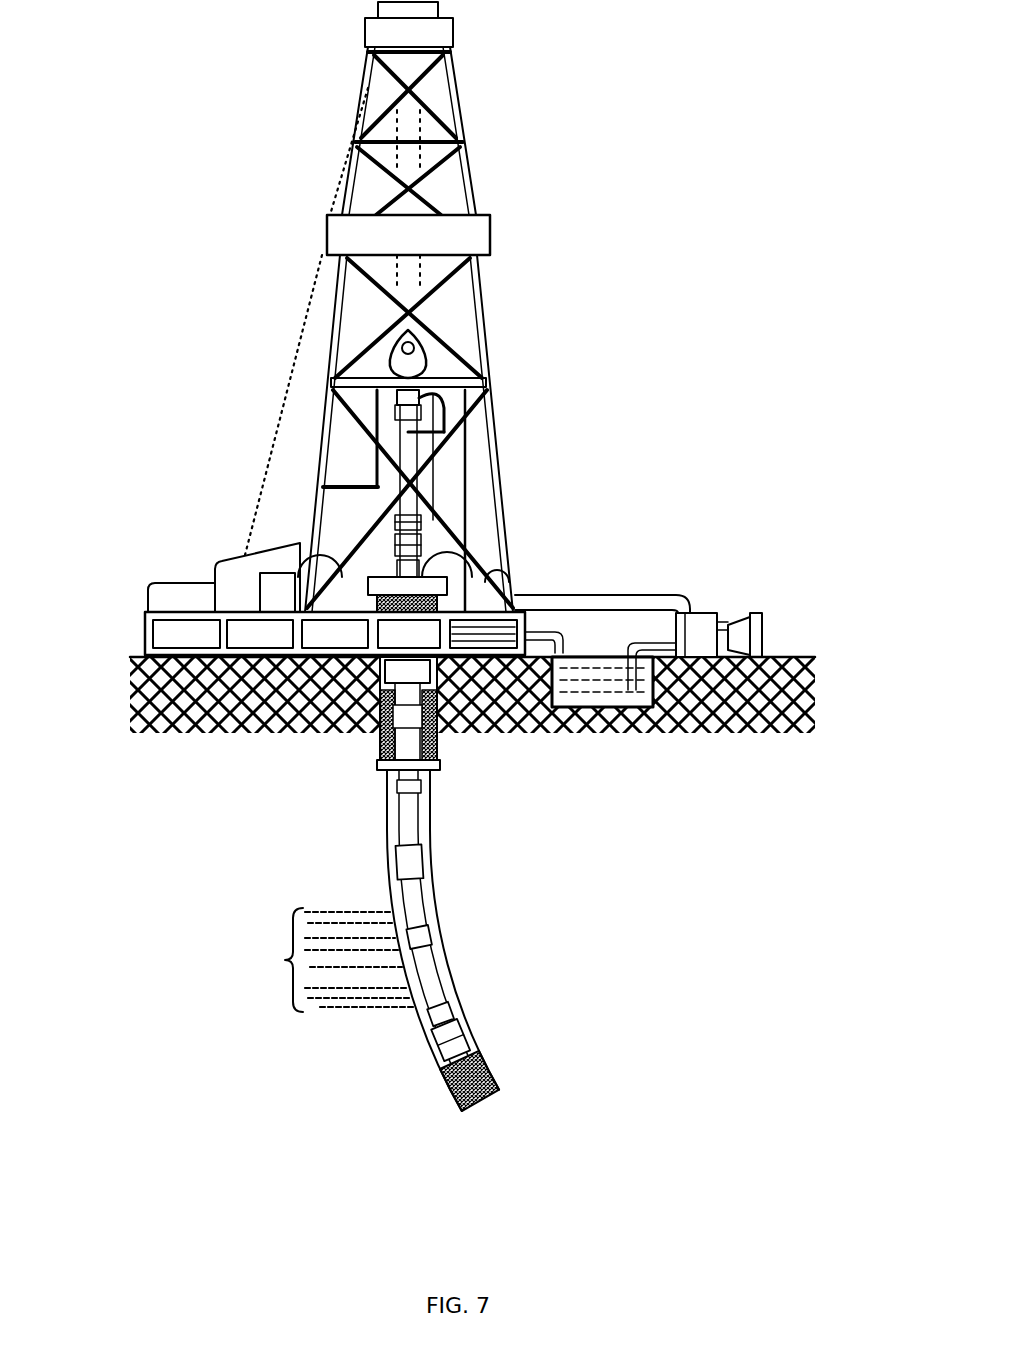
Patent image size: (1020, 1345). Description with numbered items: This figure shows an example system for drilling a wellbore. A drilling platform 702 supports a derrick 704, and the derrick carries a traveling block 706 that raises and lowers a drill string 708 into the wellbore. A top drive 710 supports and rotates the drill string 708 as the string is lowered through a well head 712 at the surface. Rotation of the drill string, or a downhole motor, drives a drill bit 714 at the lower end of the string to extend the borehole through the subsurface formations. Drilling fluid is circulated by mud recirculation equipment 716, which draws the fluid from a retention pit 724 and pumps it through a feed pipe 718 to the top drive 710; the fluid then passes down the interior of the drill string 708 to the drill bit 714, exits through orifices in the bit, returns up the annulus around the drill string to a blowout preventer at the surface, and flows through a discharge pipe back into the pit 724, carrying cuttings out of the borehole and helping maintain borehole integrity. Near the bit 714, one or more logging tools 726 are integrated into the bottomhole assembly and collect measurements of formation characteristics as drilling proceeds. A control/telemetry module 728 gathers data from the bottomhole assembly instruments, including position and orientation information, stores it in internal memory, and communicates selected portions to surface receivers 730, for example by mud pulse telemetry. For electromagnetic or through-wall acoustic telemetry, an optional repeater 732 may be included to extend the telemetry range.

The drilling platform 702 is at (145, 650).
The derrick 704 is at (458, 157).
The traveling block 706 is at (497, 332).
The drill string 708 is at (422, 825).
The top drive 710 is at (448, 430).
The well head 712 is at (437, 575).
The drill bit 714 is at (457, 1095).
The mud recirculation equipment 716 is at (435, 873).
The feed pipe 718 is at (314, 960).
The retention pit 724 is at (592, 678).
The logging tool 726 is at (443, 1055).
The control/telemetry module 728 is at (430, 1020).
The surface receivers 730 is at (443, 518).
The repeater 732 is at (258, 575).